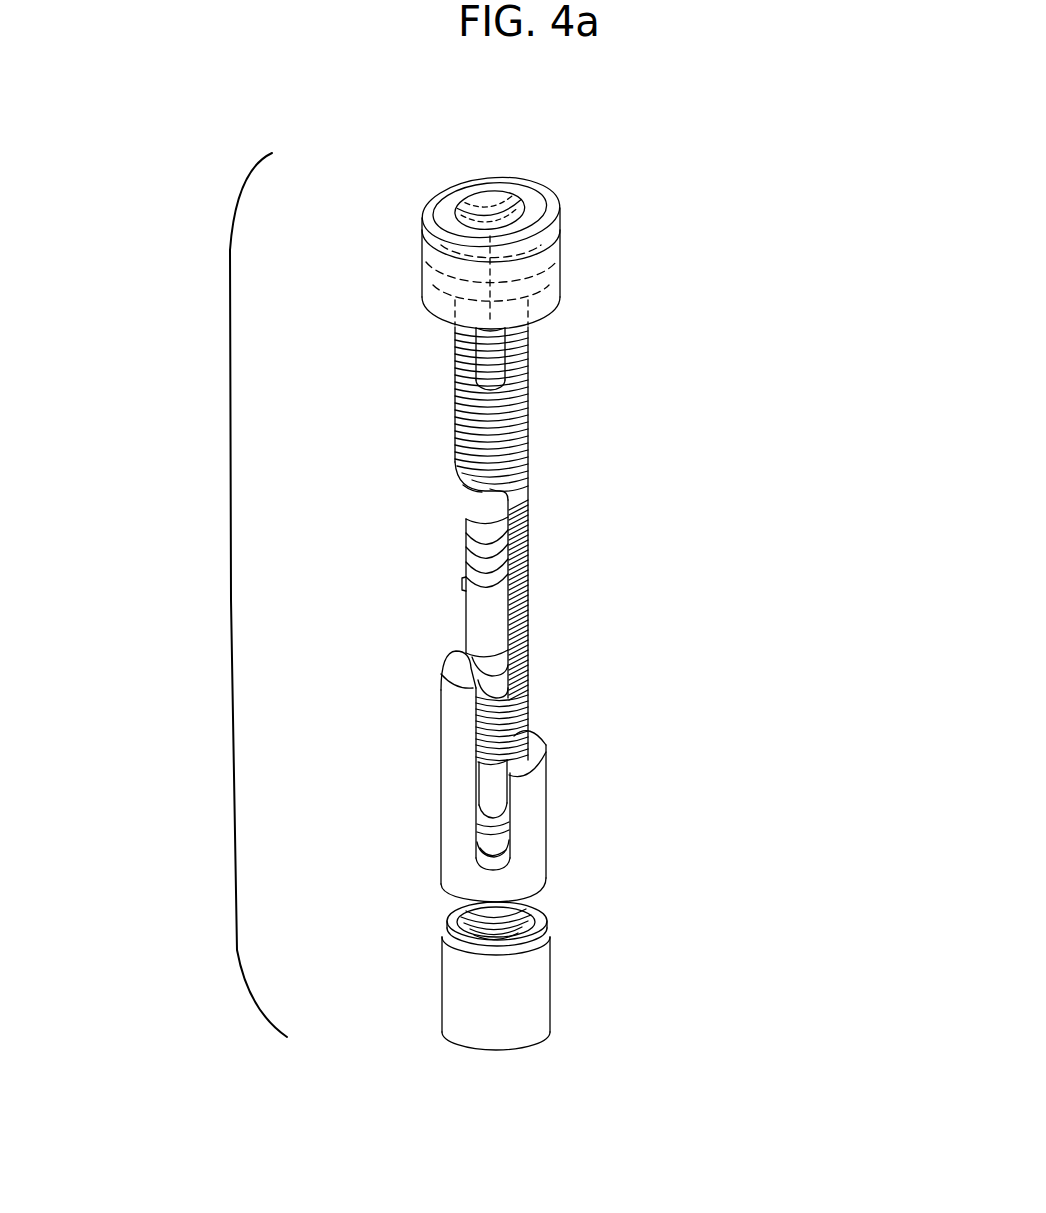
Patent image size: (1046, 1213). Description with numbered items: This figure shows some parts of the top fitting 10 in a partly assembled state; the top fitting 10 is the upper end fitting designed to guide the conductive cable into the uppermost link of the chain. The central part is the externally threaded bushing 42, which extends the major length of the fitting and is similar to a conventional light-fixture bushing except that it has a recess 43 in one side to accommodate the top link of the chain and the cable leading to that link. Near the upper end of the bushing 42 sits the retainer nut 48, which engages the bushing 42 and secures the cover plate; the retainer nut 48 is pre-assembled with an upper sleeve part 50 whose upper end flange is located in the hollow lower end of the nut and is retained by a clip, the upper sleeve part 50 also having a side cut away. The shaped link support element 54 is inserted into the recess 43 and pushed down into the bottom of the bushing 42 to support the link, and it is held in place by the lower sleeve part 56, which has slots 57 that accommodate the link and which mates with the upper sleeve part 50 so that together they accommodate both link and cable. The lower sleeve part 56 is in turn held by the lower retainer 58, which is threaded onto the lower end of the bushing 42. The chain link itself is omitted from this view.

The top fitting 10 is at (230, 622).
The externally threaded bushing 42 is at (528, 463).
The recess 43 is at (477, 502).
The retainer nut 48 is at (560, 265).
The upper sleeve part 50 is at (527, 360).
The shaped link support element 54 is at (460, 604).
The lower sleeve part 56 is at (528, 832).
The slots 57 is at (490, 866).
The lower retainer 58 is at (522, 1000).